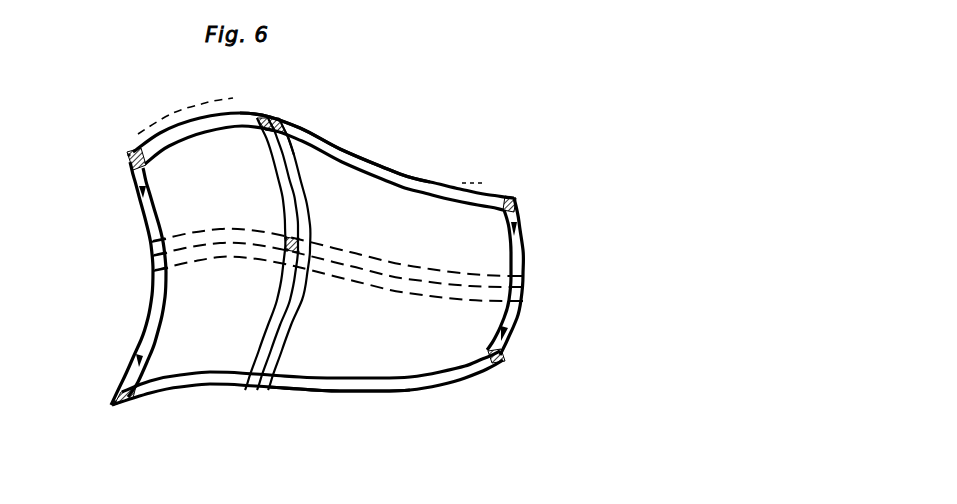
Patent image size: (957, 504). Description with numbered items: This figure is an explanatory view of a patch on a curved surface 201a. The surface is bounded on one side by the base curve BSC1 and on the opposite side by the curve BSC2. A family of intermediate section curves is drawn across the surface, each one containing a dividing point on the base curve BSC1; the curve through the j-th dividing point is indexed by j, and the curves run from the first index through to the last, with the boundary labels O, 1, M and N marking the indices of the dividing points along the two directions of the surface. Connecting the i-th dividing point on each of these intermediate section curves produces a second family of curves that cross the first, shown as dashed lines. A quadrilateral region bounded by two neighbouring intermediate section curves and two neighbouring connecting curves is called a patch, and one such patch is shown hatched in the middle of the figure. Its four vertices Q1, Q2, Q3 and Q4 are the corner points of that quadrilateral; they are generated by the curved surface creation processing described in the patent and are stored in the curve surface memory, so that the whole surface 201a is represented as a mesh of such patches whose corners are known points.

The surface patch 201a is at (454, 352).
The base curve BSC1 is at (400, 175).
The second boundary spline curve BSC2 is at (338, 392).
The vertex Q1 is at (288, 252).
The vertex Q2 is at (287, 238).
The vertex Q3 is at (299, 240).
The vertex Q4 is at (301, 252).
The origin index 0 O is at (119, 153).
The row index 1 is at (182, 120).
The last row index M is at (102, 403).
The number of intermediate section curves N is at (485, 184).
The dividing point index j is at (258, 110).